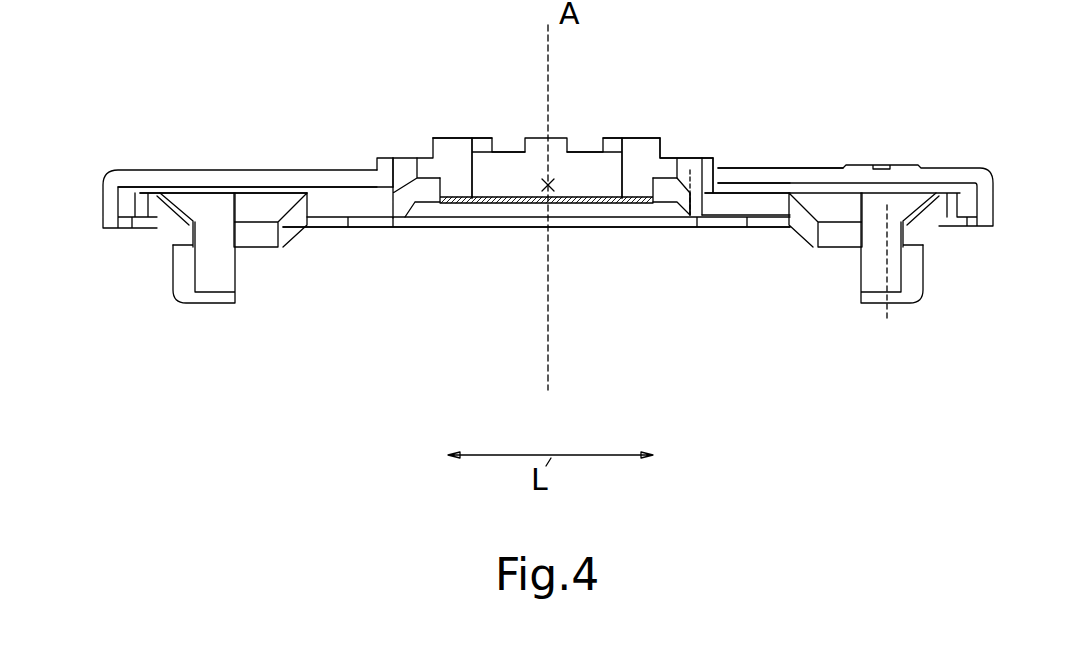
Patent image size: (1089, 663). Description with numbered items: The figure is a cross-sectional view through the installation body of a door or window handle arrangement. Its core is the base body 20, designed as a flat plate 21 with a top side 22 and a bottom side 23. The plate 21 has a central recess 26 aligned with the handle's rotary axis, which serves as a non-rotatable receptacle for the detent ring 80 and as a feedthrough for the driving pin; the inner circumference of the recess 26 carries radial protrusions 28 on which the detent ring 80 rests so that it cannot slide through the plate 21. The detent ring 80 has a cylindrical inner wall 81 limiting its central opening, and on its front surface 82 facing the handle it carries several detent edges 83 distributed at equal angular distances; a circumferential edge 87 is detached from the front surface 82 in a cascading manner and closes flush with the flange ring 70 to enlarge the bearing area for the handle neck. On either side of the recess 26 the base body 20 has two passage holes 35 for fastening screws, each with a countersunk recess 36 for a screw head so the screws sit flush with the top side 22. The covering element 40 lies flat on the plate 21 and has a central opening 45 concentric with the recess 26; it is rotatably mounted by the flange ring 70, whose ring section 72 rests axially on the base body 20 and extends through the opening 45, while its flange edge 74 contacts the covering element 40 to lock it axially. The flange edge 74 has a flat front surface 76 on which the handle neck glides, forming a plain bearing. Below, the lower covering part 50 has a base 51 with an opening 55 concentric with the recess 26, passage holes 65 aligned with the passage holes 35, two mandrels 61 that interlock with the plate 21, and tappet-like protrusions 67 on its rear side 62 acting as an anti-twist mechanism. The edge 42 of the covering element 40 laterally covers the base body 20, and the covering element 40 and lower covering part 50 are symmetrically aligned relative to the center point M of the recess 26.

The base body 20 is at (539, 278).
The plate 21 is at (727, 204).
The top side 22 is at (354, 183).
The bottom side 23 is at (368, 220).
The recess 26 is at (649, 254).
The radial protrusions 28 is at (653, 187).
The passage holes 35 is at (887, 320).
The countersunk recess 36 is at (293, 226).
The covering element 40 is at (787, 173).
The edge 42 is at (110, 206).
The central opening 45 is at (707, 180).
The lower covering part 50 is at (452, 228).
The base 51 is at (523, 195).
The opening 55 is at (409, 220).
The mandrels 61 is at (767, 223).
The rear side 62 is at (603, 227).
The passage holes 65 is at (165, 227).
The tappet-like protrusions 67 is at (183, 287).
The flange ring 70 is at (407, 168).
The ring section 72 is at (682, 226).
The flange edge 74 is at (708, 157).
The front surface 76 is at (388, 150).
The detent ring 80 is at (452, 152).
The cylindrical inner wall 81 is at (503, 175).
The front surface 82 is at (516, 148).
The detent edges 83 is at (442, 138).
The circumferential edge 87 is at (667, 155).
The center point M is at (551, 185).